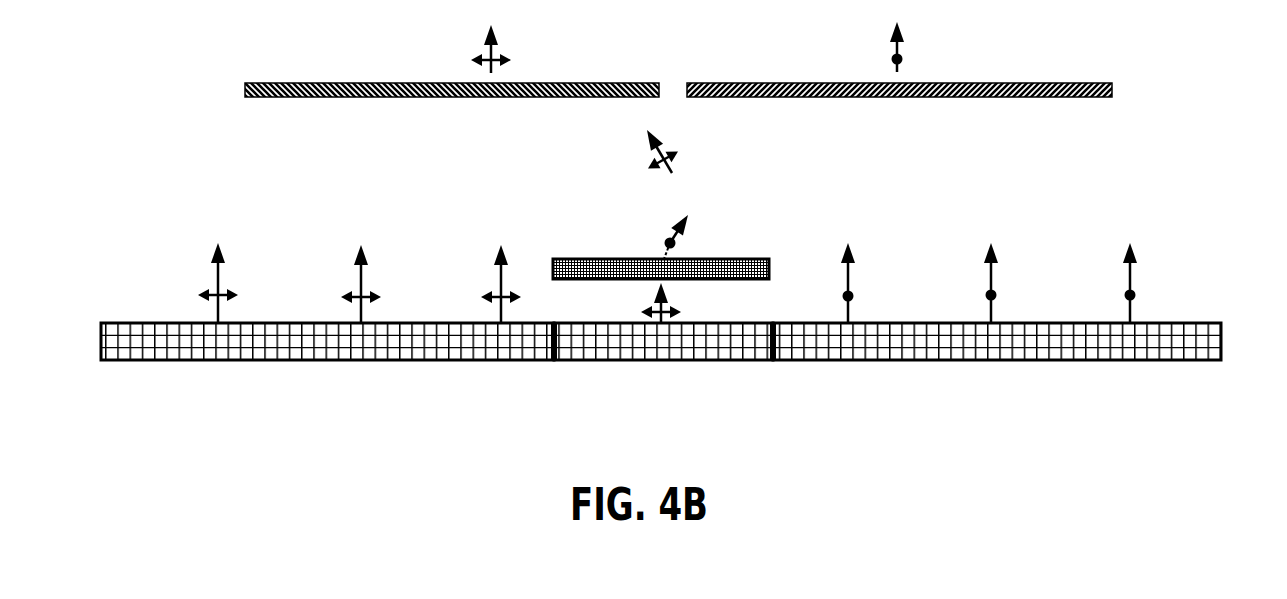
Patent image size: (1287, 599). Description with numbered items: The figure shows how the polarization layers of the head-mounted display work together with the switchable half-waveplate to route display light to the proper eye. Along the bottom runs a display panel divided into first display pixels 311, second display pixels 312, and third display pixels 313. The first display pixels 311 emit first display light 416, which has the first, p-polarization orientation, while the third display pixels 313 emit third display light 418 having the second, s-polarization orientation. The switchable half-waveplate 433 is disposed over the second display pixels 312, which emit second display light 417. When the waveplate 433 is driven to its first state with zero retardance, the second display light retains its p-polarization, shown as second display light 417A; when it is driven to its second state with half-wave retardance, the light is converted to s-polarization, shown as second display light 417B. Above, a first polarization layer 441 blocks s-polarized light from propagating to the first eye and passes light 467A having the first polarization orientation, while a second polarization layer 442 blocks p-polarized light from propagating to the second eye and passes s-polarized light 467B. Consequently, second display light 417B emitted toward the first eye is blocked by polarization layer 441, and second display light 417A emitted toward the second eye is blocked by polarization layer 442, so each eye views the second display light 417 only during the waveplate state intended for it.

The first display pixels 311 is at (465, 360).
The second display pixels 312 is at (728, 361).
The third display pixels 313 is at (912, 361).
The first display light 416 is at (359, 282).
The second display light 417 is at (679, 303).
The second display light 417A is at (679, 174).
The second display light 417B is at (665, 231).
The third display light 418 is at (978, 283).
The switchable half-waveplate 433 is at (769, 265).
The first polarization layer 441 is at (245, 93).
The second polarization layer 442 is at (1112, 90).
The light 467A is at (503, 49).
The light 467B is at (913, 47).